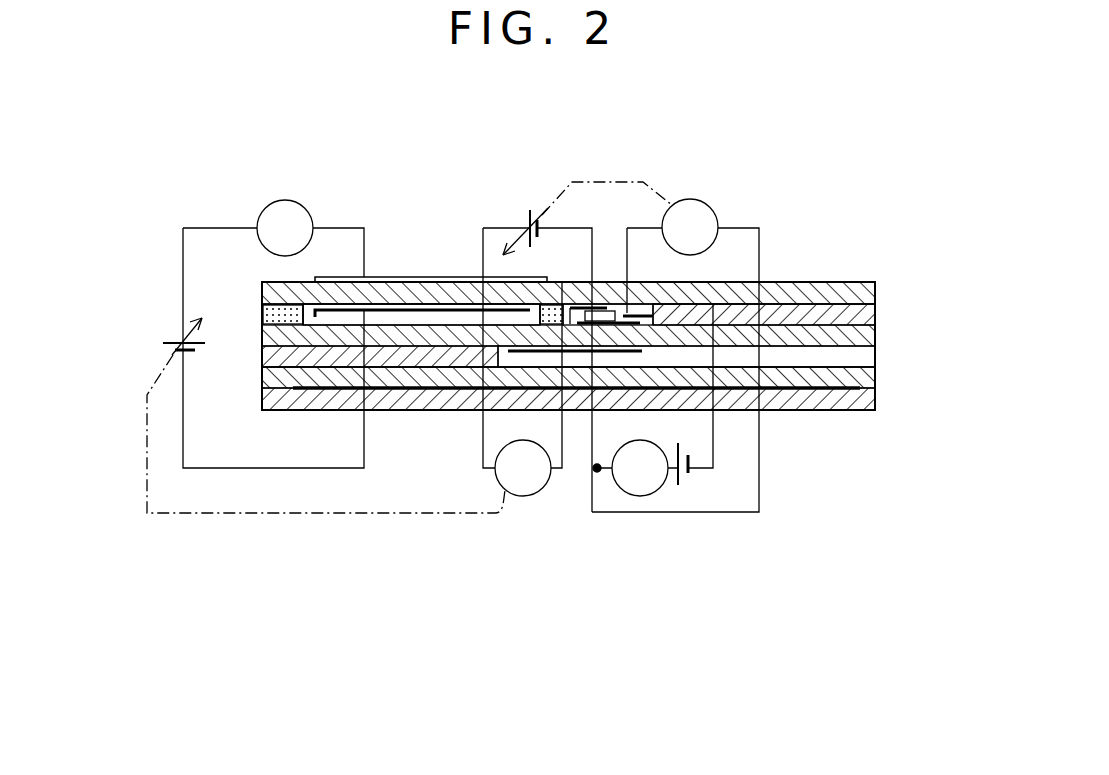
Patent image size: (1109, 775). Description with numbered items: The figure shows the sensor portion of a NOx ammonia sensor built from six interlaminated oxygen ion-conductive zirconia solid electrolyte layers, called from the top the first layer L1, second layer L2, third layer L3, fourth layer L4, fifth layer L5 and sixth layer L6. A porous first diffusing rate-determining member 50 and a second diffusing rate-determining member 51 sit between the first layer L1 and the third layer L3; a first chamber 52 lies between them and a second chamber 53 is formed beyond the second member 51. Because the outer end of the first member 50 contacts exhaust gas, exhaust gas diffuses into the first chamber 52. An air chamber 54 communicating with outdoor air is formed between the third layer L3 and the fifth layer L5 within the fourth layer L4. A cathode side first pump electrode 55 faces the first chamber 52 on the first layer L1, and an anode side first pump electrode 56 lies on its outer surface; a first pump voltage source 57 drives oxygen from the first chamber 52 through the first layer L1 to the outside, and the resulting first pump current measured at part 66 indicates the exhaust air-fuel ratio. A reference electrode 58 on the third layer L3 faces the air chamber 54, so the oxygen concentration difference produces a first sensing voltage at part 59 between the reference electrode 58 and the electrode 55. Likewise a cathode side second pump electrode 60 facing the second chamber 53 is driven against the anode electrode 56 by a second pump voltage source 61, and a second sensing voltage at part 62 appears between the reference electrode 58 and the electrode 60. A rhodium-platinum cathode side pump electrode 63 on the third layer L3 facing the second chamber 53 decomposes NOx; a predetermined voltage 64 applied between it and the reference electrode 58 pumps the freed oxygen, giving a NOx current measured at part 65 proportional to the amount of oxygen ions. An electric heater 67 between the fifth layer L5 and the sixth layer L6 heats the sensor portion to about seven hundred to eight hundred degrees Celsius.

The first diffusing rate-determining member 50 is at (263, 317).
The second diffusing rate-determining member 51 is at (552, 308).
The first chamber 52 is at (414, 312).
The second chamber 53 is at (597, 322).
The air chamber 54 is at (813, 353).
The cathode side first pump electrode 55 is at (440, 318).
The anode side first pump electrode 56 is at (383, 277).
The first pump voltage source 57 is at (175, 341).
The reference electrode 58 is at (573, 353).
The voltage V0 part 59 is at (523, 496).
The cathode side second pump electrode 60 is at (636, 314).
The second pump voltage source 61 is at (530, 210).
The voltage V1 62 is at (710, 207).
The cathode side pump electrode for detecting NOx 63 is at (603, 316).
The predetermined voltage 64 is at (689, 470).
The current I1 65 is at (640, 496).
The current I2 part 66 is at (265, 208).
The electric heater 67 is at (425, 395).
The first layer L1 is at (868, 294).
The second layer L2 is at (868, 314).
The third layer L3 is at (868, 335).
The fourth layer L4 is at (263, 358).
The fifth layer L5 is at (868, 372).
The sixth layer L6 is at (862, 400).